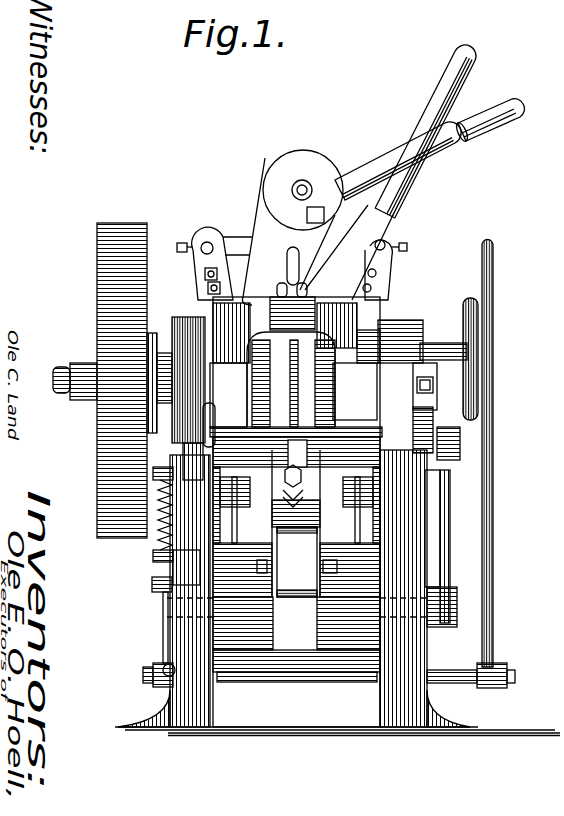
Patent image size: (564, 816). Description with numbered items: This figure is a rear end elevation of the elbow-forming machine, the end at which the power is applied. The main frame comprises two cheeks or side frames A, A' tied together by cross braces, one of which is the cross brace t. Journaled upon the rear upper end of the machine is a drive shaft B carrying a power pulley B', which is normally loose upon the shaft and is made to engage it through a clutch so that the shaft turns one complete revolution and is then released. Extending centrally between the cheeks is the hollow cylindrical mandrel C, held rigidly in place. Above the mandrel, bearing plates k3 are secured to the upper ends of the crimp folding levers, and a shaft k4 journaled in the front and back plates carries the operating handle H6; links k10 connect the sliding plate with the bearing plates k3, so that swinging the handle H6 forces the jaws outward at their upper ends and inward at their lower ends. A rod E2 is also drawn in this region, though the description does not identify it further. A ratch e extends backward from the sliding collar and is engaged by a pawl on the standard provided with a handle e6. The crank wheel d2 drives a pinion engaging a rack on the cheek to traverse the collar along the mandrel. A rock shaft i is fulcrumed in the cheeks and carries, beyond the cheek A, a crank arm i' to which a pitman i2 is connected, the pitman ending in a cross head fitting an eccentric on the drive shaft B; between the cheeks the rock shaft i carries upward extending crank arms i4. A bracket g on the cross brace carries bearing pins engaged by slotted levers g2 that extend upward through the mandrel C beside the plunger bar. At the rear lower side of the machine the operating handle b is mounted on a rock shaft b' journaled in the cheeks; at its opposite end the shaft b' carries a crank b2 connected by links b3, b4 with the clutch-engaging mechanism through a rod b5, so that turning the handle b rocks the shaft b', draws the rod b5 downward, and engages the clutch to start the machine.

The cheek A is at (337, 516).
The cheek A' is at (164, 591).
The drive shaft B is at (75, 362).
The power pulley B' is at (122, 354).
The mandrel C is at (291, 379).
The ratch e is at (277, 288).
The handle e6 is at (306, 257).
The bearing plates k3 is at (407, 271).
The shaft k4 is at (303, 187).
The links k10 is at (231, 247).
The operating handle H6 is at (375, 157).
The connecting rod E2 is at (359, 230).
The crank wheel d2 is at (473, 320).
The operating handle b is at (481, 464).
The pitman i2 is at (450, 442).
The crank arm i' is at (450, 546).
The rock shaft i is at (448, 607).
The crank arms i4 is at (237, 523).
The bracket g is at (297, 562).
The levers g2 is at (390, 533).
The cross brace t is at (257, 630).
The rock shaft b' is at (297, 692).
The crank b2 is at (157, 683).
The link b3 is at (167, 637).
The link b4 is at (153, 580).
The rod b5 is at (162, 602).